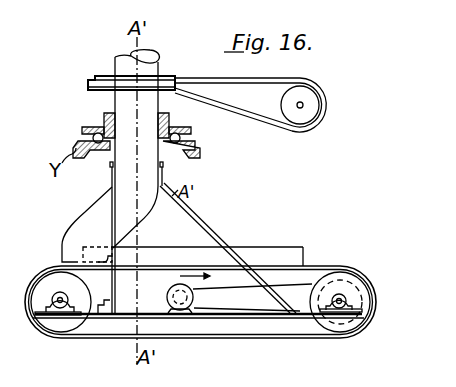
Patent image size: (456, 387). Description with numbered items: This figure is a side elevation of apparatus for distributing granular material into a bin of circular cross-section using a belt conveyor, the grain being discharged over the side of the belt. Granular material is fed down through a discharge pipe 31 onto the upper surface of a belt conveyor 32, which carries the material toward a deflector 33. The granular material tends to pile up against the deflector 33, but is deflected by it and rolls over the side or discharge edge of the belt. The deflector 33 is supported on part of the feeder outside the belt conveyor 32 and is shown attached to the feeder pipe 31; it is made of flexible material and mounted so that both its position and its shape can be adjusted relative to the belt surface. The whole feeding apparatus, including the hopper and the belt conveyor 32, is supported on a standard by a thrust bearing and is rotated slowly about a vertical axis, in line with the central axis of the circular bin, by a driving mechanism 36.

The discharge pipe 31 is at (123, 100).
The belt conveyor 32 is at (160, 264).
The deflector 33 is at (248, 253).
The driving mechanism 36 is at (263, 121).